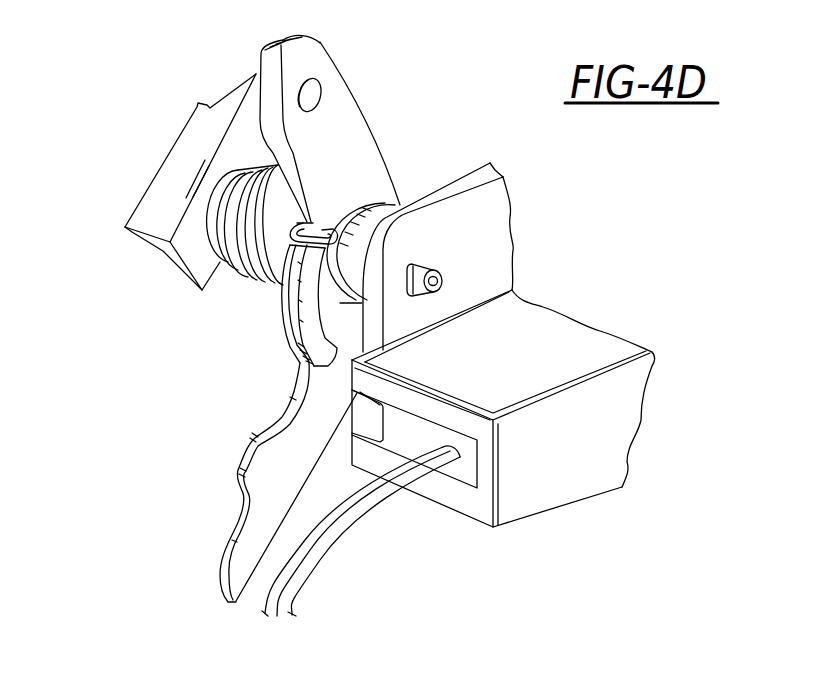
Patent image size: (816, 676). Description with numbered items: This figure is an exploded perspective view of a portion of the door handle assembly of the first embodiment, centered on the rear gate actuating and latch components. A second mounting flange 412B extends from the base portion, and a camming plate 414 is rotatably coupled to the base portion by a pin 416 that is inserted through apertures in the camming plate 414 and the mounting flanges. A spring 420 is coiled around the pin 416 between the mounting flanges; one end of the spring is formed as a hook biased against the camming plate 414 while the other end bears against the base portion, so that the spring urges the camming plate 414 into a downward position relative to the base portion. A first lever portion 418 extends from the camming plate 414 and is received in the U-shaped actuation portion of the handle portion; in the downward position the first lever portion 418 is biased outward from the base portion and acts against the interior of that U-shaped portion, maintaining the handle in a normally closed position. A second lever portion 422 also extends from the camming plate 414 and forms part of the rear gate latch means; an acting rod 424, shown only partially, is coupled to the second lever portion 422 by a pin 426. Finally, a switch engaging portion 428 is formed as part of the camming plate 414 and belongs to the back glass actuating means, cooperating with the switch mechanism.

The second mounting flange 412B is at (473, 220).
The camming plate 414 is at (277, 333).
The pin 416 is at (442, 280).
The first lever portion 418 is at (223, 553).
The spring 420 is at (237, 288).
The second lever portion 422 is at (338, 97).
The acting rod 424 is at (165, 158).
The pin 426 is at (410, 512).
The switch engaging portion 428 is at (294, 345).